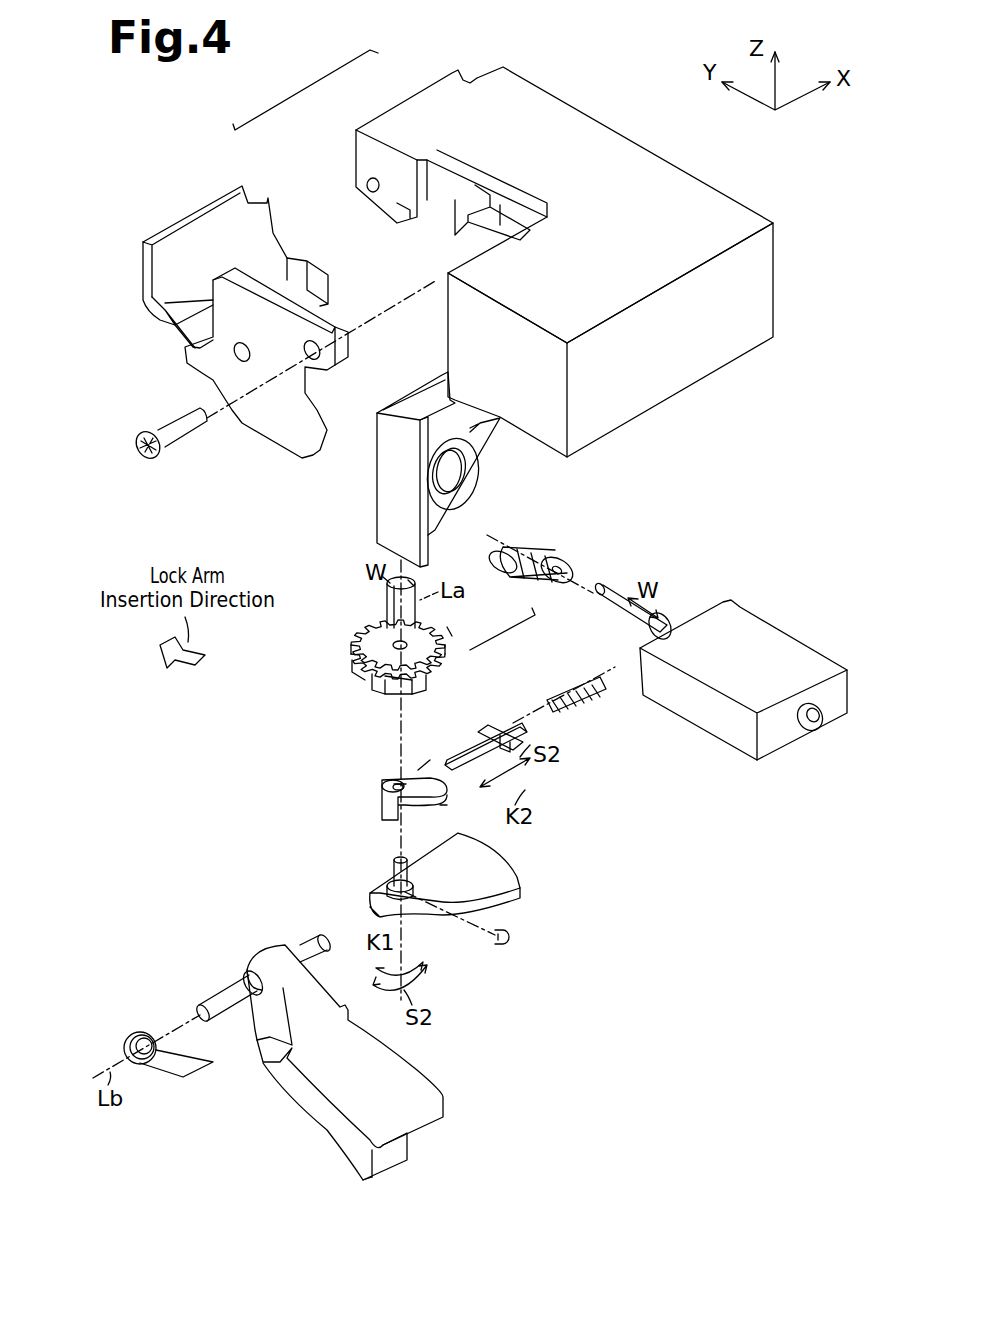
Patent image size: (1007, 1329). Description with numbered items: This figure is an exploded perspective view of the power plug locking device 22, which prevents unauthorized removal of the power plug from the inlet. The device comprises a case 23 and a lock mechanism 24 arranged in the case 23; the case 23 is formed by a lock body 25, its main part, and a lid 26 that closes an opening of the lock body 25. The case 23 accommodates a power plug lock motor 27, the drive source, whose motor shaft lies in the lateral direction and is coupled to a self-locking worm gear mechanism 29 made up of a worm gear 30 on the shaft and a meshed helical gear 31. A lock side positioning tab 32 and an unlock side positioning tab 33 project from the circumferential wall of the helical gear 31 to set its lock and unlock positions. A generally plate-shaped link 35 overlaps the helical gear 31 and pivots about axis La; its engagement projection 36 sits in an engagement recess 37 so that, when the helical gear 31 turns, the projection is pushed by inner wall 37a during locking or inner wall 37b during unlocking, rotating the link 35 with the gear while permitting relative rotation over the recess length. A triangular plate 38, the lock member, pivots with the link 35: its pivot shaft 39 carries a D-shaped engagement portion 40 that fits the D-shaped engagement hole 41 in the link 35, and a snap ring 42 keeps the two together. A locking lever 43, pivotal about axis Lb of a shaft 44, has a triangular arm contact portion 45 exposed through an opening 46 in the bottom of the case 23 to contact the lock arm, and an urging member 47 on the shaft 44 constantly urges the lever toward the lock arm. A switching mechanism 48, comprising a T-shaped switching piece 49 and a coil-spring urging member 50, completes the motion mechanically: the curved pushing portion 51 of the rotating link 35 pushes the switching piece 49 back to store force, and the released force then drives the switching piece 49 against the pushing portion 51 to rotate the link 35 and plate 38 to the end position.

The power plug locking device 22 is at (188, 96).
The case 23 is at (305, 88).
The lock mechanism 24 is at (632, 885).
The lock body 25 is at (405, 92).
The lid 26 is at (235, 185).
The power plug lock motor 27 is at (765, 622).
The worm gear mechanism 29 is at (502, 634).
The worm gear 30 is at (525, 585).
The helical gear 31 is at (443, 630).
The lock side positioning tab 32 is at (370, 630).
The unlock side positioning tab 33 is at (352, 672).
The link 35 is at (436, 754).
The engagement projection 36 is at (380, 790).
The engagement recess 37 is at (398, 685).
The inner wall 37a is at (372, 690).
The inner wall 37b is at (425, 688).
The plate 38 is at (517, 876).
The pivot shaft 39 is at (386, 887).
The engagement portion 40 is at (392, 860).
The engagement hole 41 is at (395, 784).
The snap ring 42 is at (508, 937).
The locking lever 43 is at (285, 1085).
The shaft 44 is at (215, 998).
The arm contact portion 45 is at (345, 1148).
The opening 46 is at (470, 230).
The urging member 47 is at (135, 1035).
The switching mechanism 48 is at (622, 773).
The switching piece 49 is at (480, 720).
The urging member 50 is at (602, 700).
The pushing portion 51 is at (442, 822).